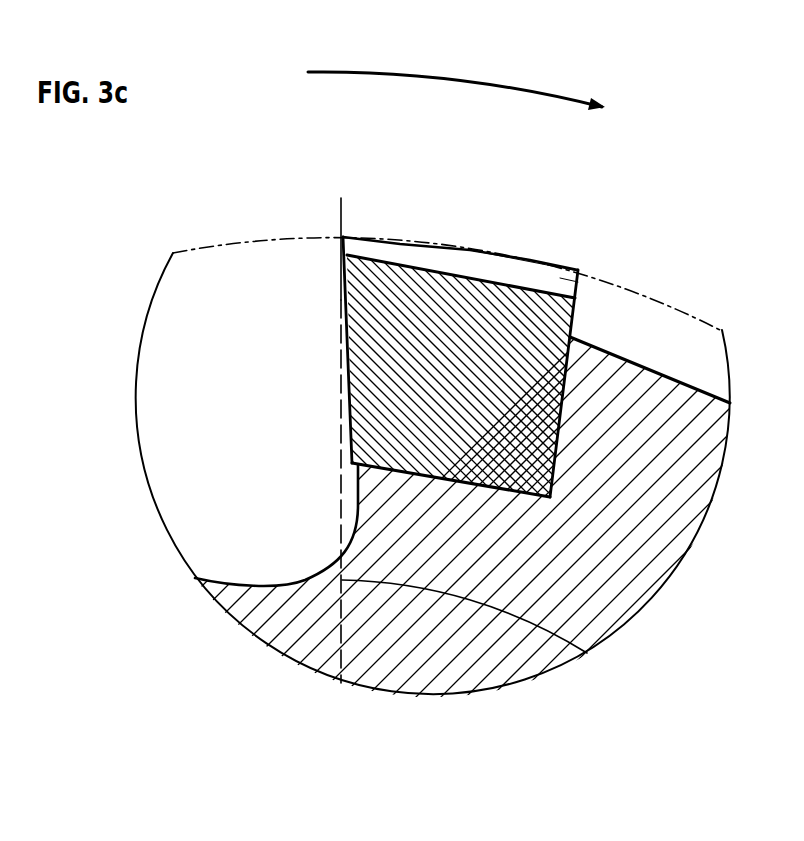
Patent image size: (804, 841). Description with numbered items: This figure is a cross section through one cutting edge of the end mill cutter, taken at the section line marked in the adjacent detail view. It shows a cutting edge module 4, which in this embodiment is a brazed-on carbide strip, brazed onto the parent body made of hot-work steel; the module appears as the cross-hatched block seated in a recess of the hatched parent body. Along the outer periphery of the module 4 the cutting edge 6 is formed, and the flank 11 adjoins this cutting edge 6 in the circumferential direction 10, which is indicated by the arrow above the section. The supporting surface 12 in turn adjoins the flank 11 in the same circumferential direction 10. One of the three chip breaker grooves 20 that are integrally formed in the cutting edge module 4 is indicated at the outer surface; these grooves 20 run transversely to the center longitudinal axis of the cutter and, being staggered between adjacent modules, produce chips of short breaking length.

The cutting edge module 4 is at (423, 433).
The cutting edge 6 is at (348, 325).
The circumferential direction 10 is at (458, 73).
The flank 11 is at (418, 249).
The supporting surface 12 is at (553, 258).
The chip breaker groove 20 is at (561, 283).